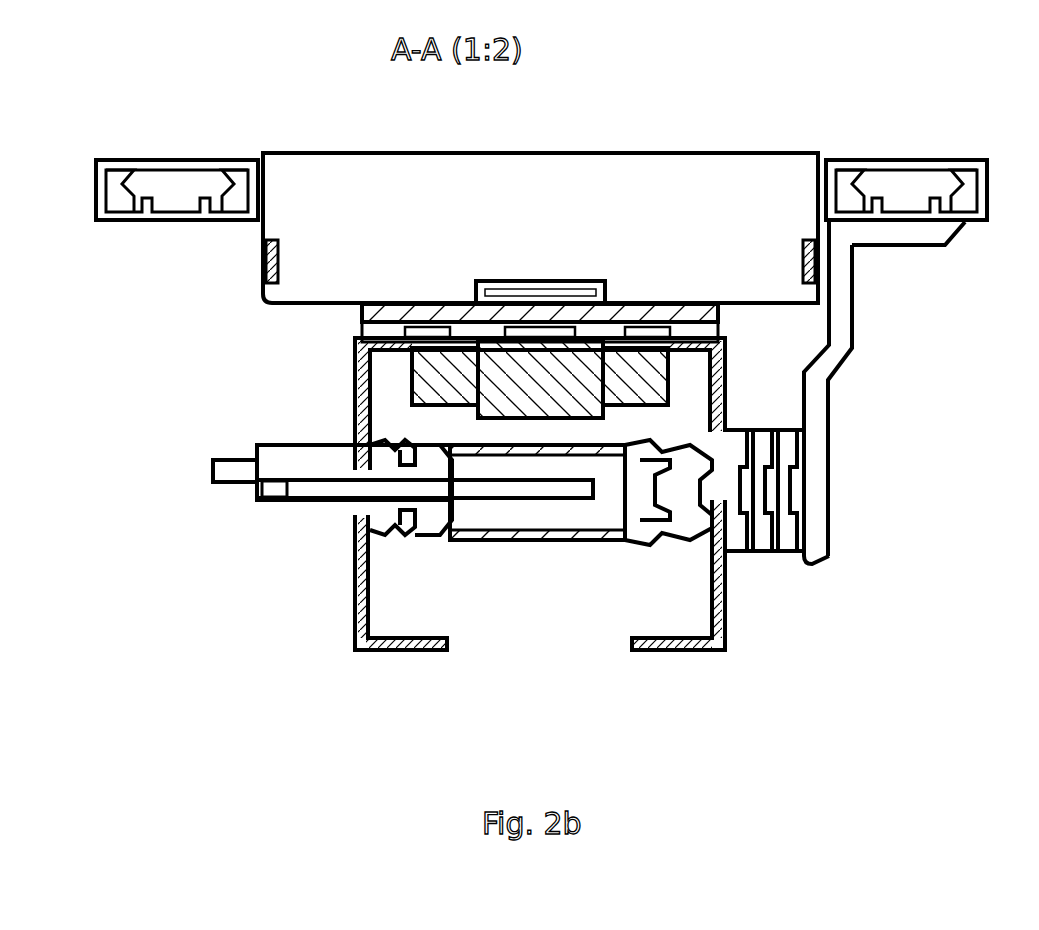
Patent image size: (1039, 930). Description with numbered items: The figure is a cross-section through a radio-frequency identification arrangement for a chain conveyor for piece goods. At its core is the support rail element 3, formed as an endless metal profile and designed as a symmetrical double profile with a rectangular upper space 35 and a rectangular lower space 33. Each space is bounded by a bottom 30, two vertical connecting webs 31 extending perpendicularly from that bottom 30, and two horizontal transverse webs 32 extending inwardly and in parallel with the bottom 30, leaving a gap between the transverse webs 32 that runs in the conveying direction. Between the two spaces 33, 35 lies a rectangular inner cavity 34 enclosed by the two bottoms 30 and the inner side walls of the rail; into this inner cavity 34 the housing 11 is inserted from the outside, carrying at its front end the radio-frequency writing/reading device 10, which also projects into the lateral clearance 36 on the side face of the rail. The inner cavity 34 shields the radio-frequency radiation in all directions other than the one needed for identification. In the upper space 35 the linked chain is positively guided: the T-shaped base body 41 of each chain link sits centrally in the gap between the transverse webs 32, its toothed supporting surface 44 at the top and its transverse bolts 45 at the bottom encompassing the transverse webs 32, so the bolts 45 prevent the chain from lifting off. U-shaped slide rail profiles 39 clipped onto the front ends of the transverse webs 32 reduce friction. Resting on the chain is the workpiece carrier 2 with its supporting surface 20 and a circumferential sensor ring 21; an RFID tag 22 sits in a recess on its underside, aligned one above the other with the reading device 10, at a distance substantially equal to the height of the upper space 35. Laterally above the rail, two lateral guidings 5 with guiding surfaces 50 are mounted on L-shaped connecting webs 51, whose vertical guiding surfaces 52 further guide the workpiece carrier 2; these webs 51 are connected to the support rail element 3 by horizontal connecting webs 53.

The workpiece carrier 2 is at (588, 176).
The support rail element 3 is at (725, 643).
The lateral guiding 5 is at (915, 162).
The radio-frequency writing/reading device 10 is at (573, 470).
The housing 11 is at (262, 484).
The supporting surface of workpiece carrier 20 is at (350, 152).
The sensor ring 21 is at (822, 266).
The RFID tag 22 is at (578, 282).
The bottom of support rail element 30 is at (527, 530).
The vertical connecting web 31 is at (356, 598).
The horizontal transverse web 32 is at (412, 648).
The lower space of support rail element 33 is at (582, 620).
The inner cavity of support rail element 34 is at (568, 513).
The upper space of support rail element 35 is at (688, 407).
The lateral clearance 36 is at (360, 508).
The slide rail profile 39 is at (425, 333).
The base body 41 is at (515, 383).
The supporting surface 44 is at (362, 310).
The transverse bolt 45 is at (653, 382).
The guiding surface of lateral guiding 50 is at (832, 168).
The connecting web 51 is at (838, 352).
The guiding surface of connecting web 52 is at (833, 312).
The connecting web 53 is at (762, 551).